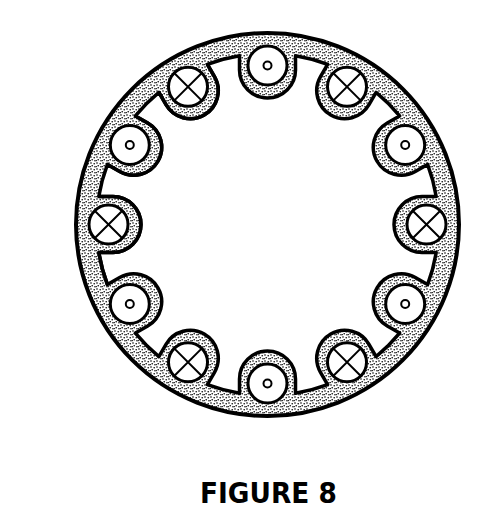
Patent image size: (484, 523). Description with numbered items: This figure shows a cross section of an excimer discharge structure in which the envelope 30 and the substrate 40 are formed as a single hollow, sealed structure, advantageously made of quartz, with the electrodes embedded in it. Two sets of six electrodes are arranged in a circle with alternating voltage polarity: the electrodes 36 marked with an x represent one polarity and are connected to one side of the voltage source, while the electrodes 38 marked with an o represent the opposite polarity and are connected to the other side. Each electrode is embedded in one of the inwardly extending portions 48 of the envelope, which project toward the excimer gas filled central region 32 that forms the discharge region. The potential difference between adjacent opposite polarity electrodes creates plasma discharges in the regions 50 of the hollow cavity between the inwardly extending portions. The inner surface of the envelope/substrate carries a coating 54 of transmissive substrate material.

The envelope 30 is at (239, 216).
The substrate 40 is at (239, 216).
The central region 32 is at (302, 110).
The electrodes 36 is at (77, 222).
The electrodes 38 is at (100, 140).
The inwardly extending portions 48 is at (141, 224).
The regions 50 is at (112, 268).
The coating 54 is at (150, 102).